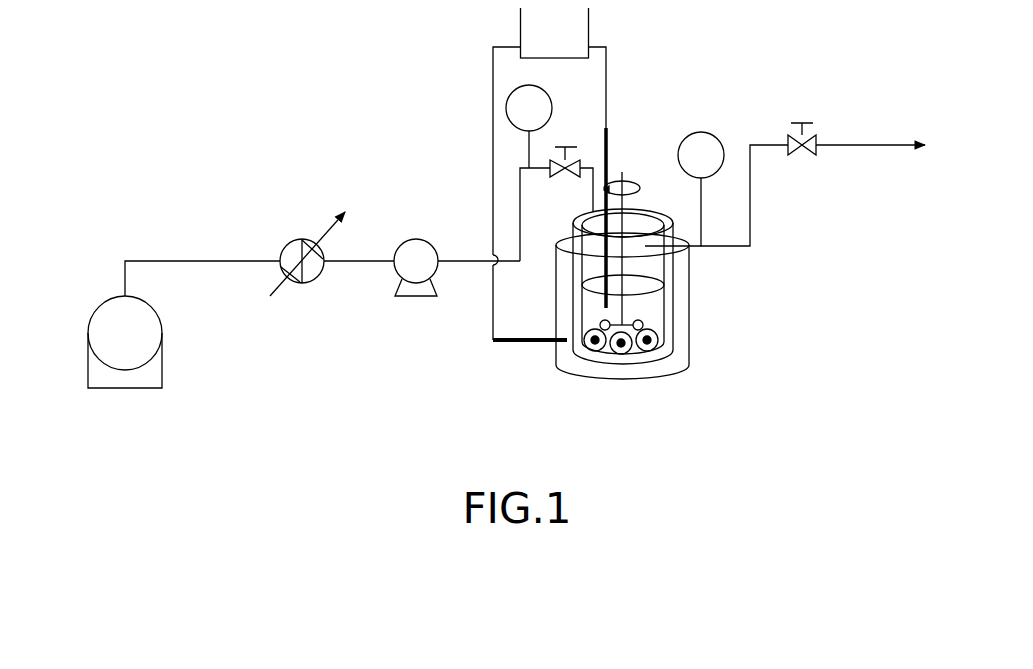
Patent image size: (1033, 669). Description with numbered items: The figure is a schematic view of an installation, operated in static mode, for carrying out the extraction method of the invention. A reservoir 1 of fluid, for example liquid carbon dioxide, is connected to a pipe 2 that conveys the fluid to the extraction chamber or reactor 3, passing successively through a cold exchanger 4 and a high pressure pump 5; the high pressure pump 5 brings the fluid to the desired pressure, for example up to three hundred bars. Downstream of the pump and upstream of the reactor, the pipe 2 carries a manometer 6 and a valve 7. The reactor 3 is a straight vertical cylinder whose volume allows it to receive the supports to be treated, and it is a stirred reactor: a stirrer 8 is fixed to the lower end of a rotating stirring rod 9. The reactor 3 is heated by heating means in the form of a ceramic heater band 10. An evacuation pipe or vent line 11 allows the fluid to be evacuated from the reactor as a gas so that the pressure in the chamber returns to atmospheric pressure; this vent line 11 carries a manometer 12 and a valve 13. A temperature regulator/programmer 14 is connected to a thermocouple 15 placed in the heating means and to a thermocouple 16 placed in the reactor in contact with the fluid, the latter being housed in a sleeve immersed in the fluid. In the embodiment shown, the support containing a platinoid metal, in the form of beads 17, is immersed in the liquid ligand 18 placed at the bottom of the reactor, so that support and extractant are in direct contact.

The reservoir of fluid 1 is at (103, 307).
The pipe 2 is at (193, 260).
The extraction chamber or reactor 3 is at (692, 372).
The cold exchanger 4 is at (288, 242).
The high pressure pump 5 is at (417, 240).
The manometer 6 is at (507, 97).
The valve 7 is at (577, 147).
The stirrer 8 is at (613, 330).
The rotating stirring rod 9 is at (625, 203).
The ceramic heater band 10 is at (681, 281).
The evacuation pipe or vent line 11 is at (750, 210).
The manometer 12 is at (705, 132).
The valve 13 is at (808, 122).
The temperature regulator/programmer 14 is at (520, 12).
The thermocouple 15 is at (508, 352).
The thermocouple 16 is at (617, 134).
The beads 17 is at (650, 344).
The liquid ligand 18 is at (657, 310).